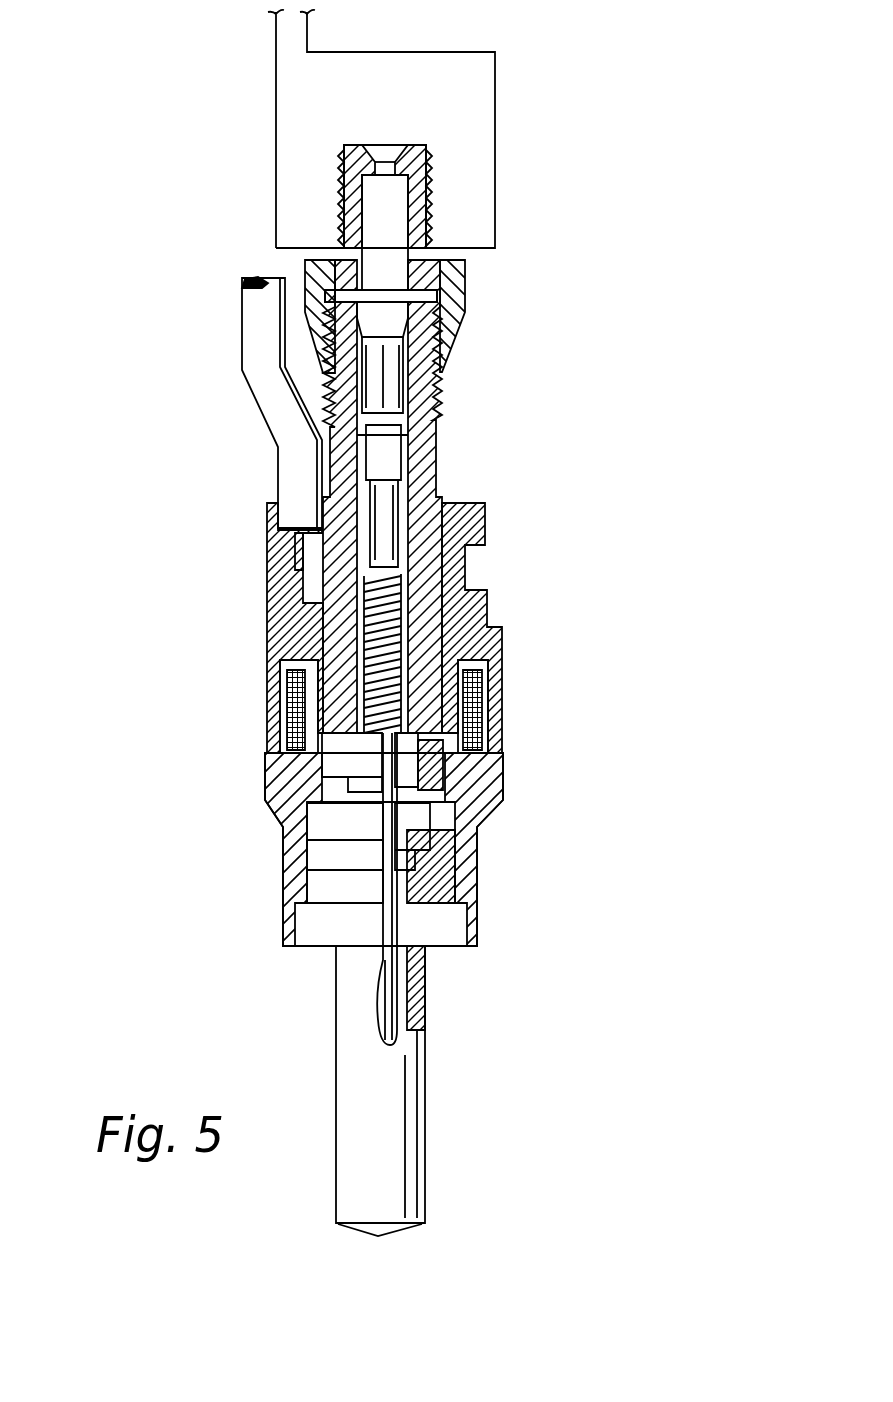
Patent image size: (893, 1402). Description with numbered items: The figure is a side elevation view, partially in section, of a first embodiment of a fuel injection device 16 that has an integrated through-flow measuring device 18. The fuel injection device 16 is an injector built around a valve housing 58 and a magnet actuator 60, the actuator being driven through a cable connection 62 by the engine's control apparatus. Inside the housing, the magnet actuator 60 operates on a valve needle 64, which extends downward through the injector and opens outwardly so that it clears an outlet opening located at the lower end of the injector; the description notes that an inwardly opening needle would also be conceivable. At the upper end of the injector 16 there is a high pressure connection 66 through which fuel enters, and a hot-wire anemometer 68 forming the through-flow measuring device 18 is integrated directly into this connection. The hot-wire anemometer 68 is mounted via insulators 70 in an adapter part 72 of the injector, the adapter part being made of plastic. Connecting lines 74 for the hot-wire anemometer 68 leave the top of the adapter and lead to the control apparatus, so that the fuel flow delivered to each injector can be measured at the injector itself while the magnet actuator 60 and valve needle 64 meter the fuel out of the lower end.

The fuel injection device 16 is at (193, 417).
The through-flow measuring device 18 is at (305, 260).
The valve housing 58 is at (275, 590).
The magnet actuator 60 is at (380, 532).
The cable connection 62 is at (260, 307).
The valve needle 64 is at (383, 962).
The high pressure connection 66 is at (392, 202).
The hot-wire anemometer 68 is at (397, 258).
The insulators 70 is at (340, 227).
The adapter part 72 is at (455, 308).
The connecting lines 74 is at (276, 33).